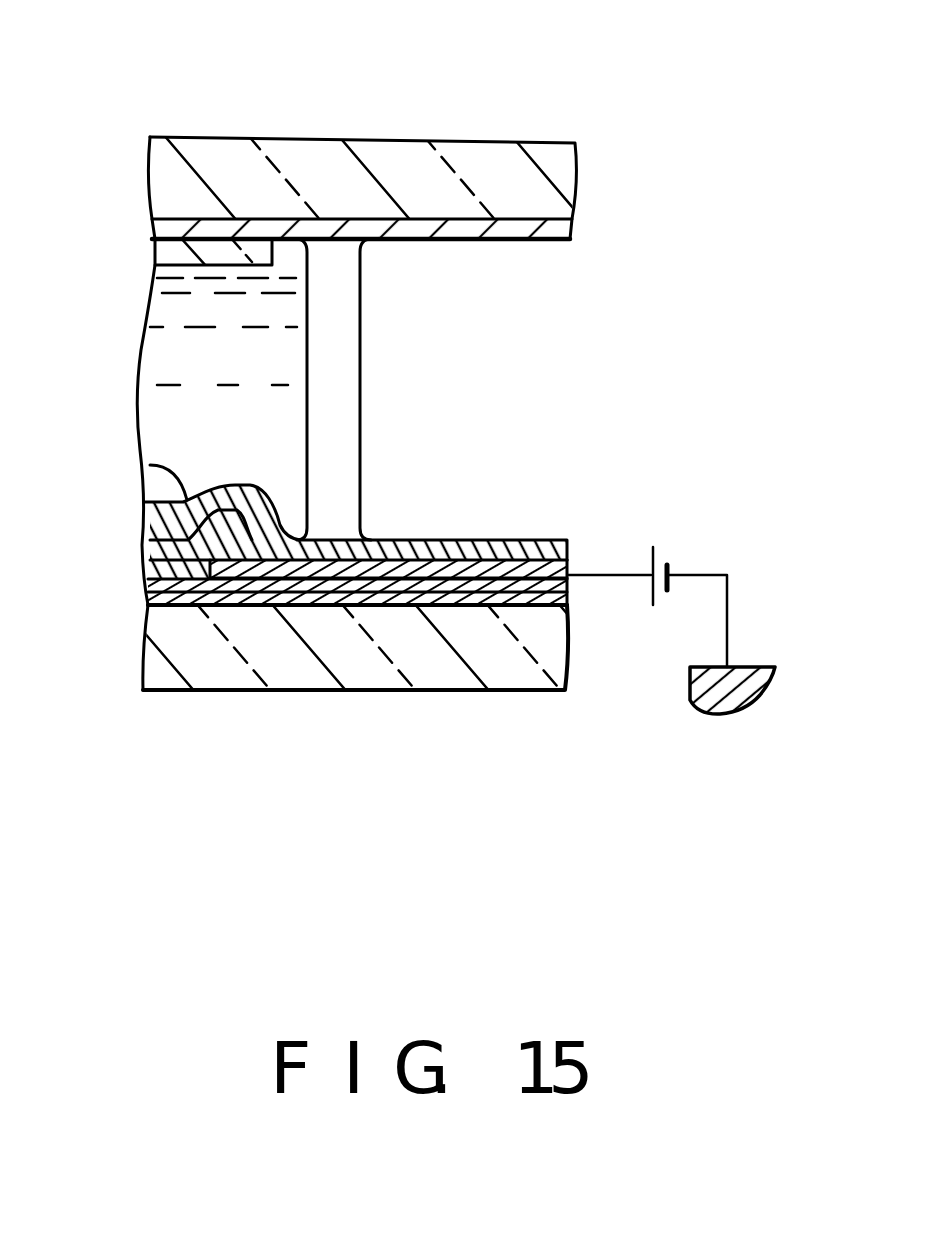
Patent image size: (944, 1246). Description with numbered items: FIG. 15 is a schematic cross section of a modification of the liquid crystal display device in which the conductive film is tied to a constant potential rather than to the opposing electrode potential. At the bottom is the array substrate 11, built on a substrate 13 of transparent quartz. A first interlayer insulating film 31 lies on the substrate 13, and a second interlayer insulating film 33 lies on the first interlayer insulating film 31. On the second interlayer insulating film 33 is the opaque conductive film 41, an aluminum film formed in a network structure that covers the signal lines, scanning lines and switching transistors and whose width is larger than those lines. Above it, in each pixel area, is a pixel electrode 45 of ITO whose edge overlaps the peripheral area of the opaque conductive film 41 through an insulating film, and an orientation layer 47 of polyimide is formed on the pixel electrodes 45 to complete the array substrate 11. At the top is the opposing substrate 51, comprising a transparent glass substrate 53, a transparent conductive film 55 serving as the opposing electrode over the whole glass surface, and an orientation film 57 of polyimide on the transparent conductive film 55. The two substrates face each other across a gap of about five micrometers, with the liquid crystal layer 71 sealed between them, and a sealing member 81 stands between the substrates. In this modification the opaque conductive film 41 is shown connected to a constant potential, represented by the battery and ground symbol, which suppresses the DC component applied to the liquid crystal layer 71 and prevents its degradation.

The array substrate 11 is at (395, 697).
The substrate 13 is at (230, 662).
The first interlayer insulating film 31 is at (145, 600).
The second interlayer insulating film 33 is at (148, 585).
The opaque conductive film 41 is at (495, 562).
The pixel electrode 45 is at (150, 546).
The orientation layer 47 is at (140, 466).
The opposing substrate 51 is at (255, 128).
The transparent glass substrate 53 is at (475, 165).
The transparent conductive film 55 is at (570, 235).
The orientation film 57 is at (156, 250).
The liquid crystal layer 71 is at (162, 355).
The sealing member 81 is at (332, 362).